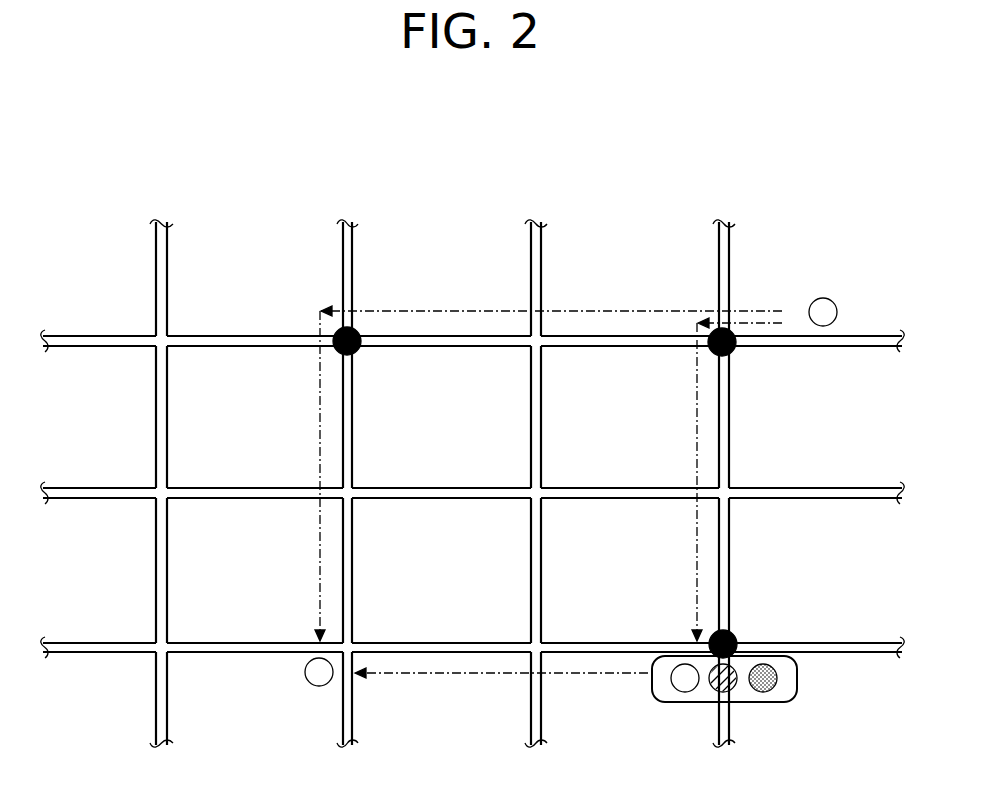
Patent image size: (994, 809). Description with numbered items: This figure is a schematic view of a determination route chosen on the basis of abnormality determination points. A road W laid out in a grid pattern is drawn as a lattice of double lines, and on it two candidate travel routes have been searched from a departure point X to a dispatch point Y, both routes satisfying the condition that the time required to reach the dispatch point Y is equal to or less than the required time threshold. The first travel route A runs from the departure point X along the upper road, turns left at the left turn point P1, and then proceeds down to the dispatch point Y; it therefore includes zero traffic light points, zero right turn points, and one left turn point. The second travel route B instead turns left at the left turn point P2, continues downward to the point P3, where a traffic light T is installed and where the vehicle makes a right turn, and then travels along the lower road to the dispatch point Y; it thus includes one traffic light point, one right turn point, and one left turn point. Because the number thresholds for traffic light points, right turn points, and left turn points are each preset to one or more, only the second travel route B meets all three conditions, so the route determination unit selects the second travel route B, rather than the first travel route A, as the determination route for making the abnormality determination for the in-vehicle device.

The road W is at (133, 336).
The first travel route A is at (318, 430).
The second travel route B is at (695, 435).
The left turn point P1 is at (358, 350).
The left turn point P2 is at (733, 350).
The traffic light point and right turn point P3 is at (734, 632).
The departure point X is at (824, 297).
The dispatch point Y is at (310, 686).
The traffic light T is at (800, 680).